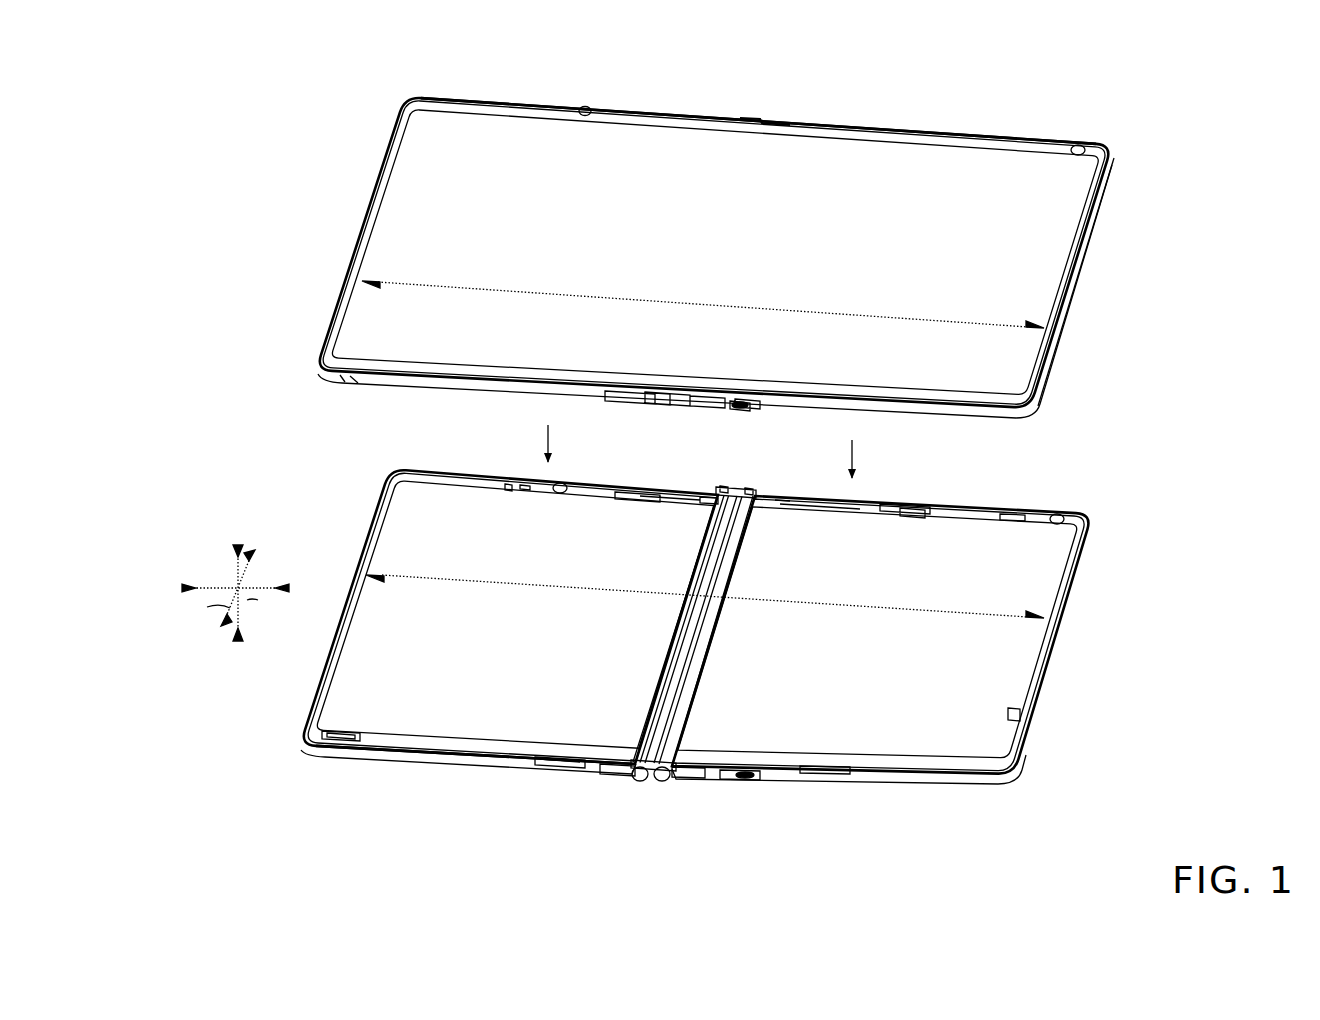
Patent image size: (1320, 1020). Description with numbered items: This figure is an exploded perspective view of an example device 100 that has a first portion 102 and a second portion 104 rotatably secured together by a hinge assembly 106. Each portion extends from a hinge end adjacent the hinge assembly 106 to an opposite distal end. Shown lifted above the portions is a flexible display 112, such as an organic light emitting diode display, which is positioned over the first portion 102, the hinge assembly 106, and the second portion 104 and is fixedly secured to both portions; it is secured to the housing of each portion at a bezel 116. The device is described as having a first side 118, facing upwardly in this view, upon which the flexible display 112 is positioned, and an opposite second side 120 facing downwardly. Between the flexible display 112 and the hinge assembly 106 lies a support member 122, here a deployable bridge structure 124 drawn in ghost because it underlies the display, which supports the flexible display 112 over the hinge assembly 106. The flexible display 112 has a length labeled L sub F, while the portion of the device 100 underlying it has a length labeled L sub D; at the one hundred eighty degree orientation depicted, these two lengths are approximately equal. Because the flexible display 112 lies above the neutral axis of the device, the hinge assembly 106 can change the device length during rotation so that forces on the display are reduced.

The device 100 is at (1095, 818).
The first portion 102 is at (357, 525).
The second portion 104 is at (956, 495).
The hinge assembly 106 is at (645, 782).
The flexible display 112 is at (404, 182).
The bezel 116 is at (396, 372).
The first side 118 is at (484, 110).
The second side 120 is at (506, 774).
The support member 122 is at (747, 549).
The deployable bridge structure 124 is at (696, 681).